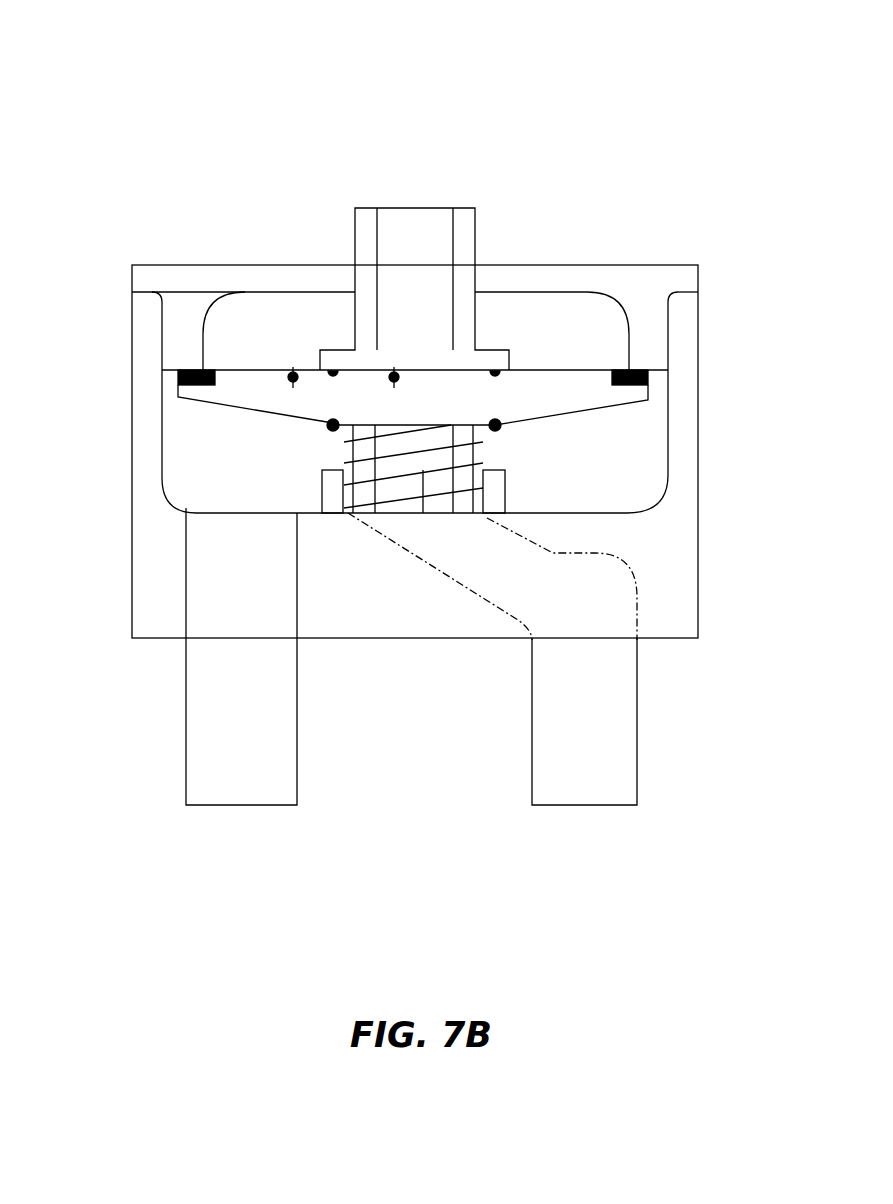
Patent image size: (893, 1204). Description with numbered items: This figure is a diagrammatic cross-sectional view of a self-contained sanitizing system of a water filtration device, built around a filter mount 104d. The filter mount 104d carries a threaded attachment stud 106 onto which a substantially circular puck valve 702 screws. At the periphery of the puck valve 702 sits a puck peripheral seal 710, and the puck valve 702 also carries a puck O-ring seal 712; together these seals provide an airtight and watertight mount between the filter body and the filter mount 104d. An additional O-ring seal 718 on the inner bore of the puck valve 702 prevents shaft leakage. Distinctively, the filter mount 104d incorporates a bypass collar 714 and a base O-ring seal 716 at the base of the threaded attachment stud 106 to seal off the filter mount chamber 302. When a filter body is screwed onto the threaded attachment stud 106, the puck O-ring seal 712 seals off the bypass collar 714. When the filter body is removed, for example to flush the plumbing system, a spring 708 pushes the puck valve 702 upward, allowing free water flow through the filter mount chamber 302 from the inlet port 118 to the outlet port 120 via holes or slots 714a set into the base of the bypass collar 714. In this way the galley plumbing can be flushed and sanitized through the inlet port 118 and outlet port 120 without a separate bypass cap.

The filter mount 104d is at (78, 77).
The filter mount chamber 302 is at (243, 453).
The threaded attachment stud 106 is at (462, 240).
The puck valve 702 is at (260, 393).
The puck peripheral seal 710 is at (650, 378).
The O-ring seal 718 is at (293, 372).
The base O-ring seal 716 is at (503, 373).
The puck O-ring seal 712 is at (501, 425).
The bypass collar 714 is at (330, 487).
The holes or slots 714a is at (482, 516).
The spring 708 is at (423, 470).
The inlet port 118 is at (243, 747).
The outlet port 120 is at (593, 747).